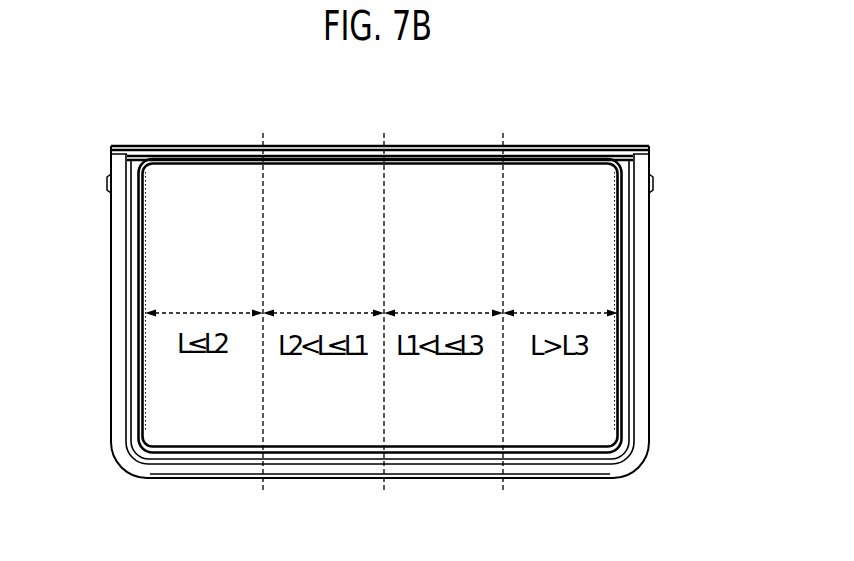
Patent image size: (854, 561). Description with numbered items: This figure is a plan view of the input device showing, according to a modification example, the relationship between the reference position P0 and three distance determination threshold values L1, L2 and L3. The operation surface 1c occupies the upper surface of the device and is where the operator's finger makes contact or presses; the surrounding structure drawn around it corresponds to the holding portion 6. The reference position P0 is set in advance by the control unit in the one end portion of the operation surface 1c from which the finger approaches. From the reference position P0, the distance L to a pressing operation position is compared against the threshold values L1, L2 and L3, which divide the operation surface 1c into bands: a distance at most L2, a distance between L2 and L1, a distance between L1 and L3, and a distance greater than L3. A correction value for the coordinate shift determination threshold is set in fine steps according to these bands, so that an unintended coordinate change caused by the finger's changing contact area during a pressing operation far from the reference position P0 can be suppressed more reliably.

The holding portion 6 is at (637, 248).
The operation surface 1c is at (430, 207).
The reference position P0 is at (146, 188).
The distance determination threshold value L1 is at (382, 299).
The distance determination threshold value L2 is at (262, 299).
The distance determination threshold value L3 is at (503, 300).